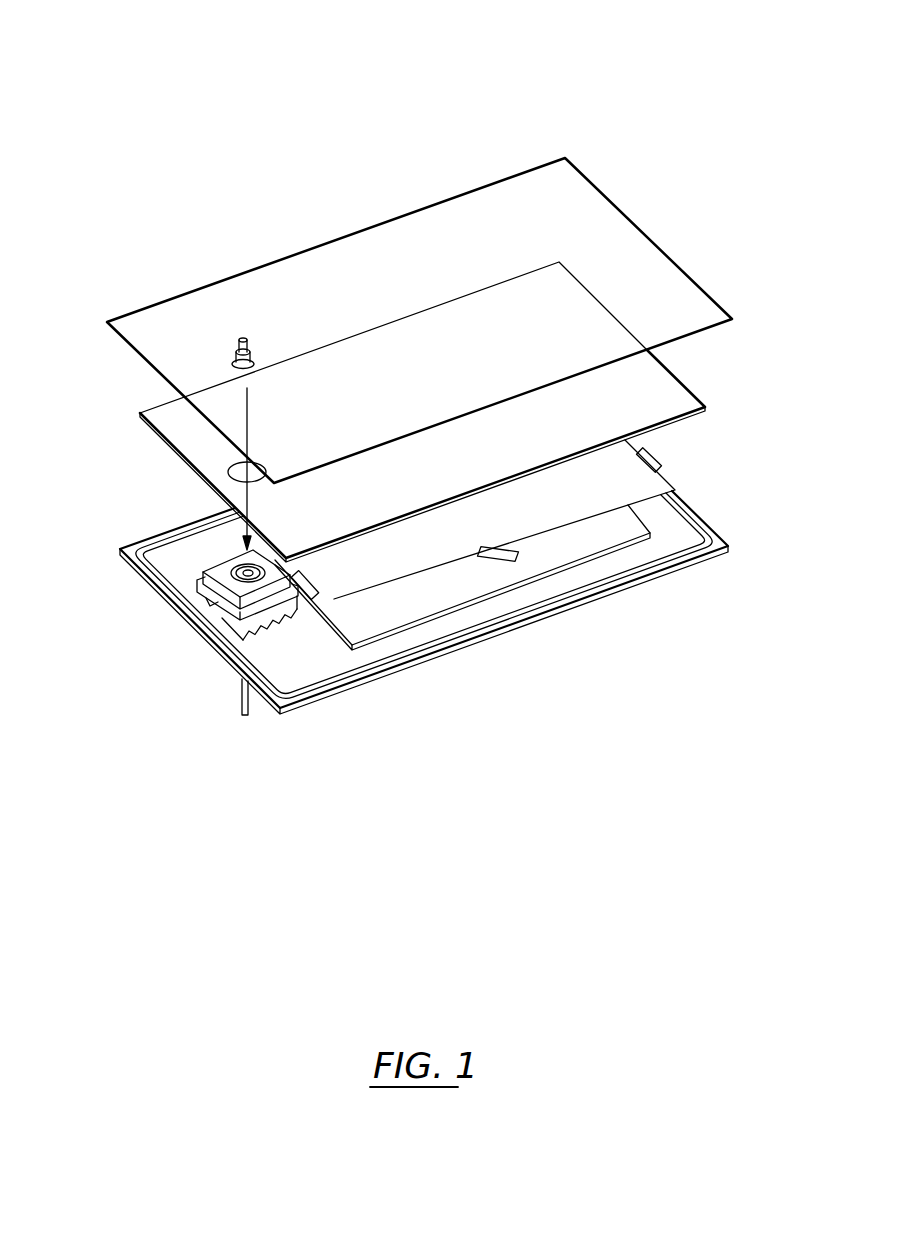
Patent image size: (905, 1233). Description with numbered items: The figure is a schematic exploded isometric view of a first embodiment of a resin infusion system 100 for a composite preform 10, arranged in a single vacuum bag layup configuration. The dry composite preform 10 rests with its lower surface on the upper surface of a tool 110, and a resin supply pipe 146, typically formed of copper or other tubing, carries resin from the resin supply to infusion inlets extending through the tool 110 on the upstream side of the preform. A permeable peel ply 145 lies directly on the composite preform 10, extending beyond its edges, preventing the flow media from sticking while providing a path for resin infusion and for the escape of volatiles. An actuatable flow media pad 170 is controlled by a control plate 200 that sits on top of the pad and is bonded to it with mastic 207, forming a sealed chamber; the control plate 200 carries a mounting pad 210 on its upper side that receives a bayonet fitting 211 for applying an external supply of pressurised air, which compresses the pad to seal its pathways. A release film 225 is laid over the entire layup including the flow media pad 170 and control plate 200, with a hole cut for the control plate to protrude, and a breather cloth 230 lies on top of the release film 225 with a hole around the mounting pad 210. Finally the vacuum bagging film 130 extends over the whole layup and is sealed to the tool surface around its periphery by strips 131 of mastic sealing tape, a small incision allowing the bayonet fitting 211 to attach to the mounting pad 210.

The resin infusion system 100 is at (498, 136).
The vacuum bagging film 130 is at (717, 320).
The breather cloth 230 is at (140, 415).
The bayonet fitting 211 is at (235, 348).
The release film 225 is at (663, 482).
The composite preform 10 is at (647, 533).
The tool 110 is at (455, 619).
The peel ply 145 is at (595, 545).
The strips of sealing tape 131 is at (522, 615).
The resin supply pipe 146 is at (237, 707).
The control plate 200 is at (218, 643).
The mounting pad 210 is at (200, 572).
The mastic 207 is at (223, 603).
The actuatable flow media pad 170 is at (260, 627).